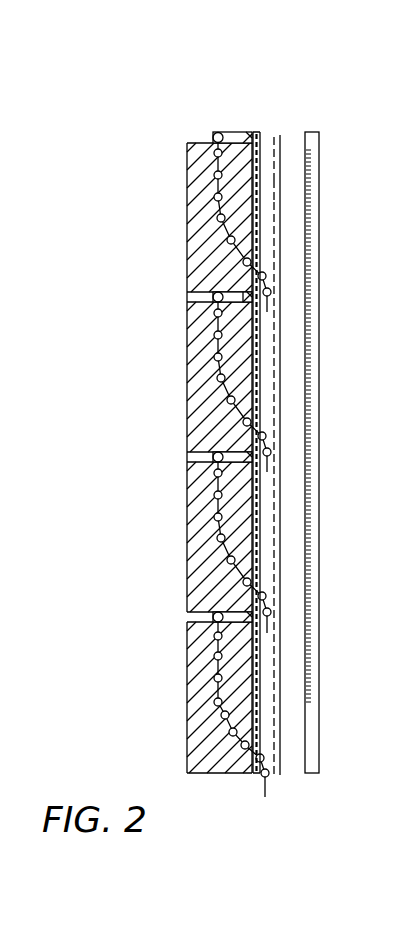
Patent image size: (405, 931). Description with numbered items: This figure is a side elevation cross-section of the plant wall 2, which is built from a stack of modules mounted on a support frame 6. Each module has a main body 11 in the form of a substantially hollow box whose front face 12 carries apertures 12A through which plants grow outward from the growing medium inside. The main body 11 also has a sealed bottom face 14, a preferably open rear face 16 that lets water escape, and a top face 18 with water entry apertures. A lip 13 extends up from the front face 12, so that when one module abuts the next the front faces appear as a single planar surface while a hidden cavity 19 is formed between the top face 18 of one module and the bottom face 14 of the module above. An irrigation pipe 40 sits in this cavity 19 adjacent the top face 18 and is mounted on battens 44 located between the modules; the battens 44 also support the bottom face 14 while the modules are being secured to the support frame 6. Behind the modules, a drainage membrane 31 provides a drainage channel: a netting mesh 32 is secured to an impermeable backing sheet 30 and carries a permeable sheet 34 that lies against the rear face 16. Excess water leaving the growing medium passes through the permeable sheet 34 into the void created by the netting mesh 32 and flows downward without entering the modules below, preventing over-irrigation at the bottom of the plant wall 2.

The plant wall 2 is at (105, 162).
The support frame 6 is at (322, 170).
The main body 11 is at (200, 412).
The front face 12 is at (185, 698).
The apertures 12A is at (185, 657).
The lip 13 is at (187, 300).
The bottom face 14 is at (193, 293).
The rear face 16 is at (252, 720).
The top face 18 is at (202, 143).
The cavity 19 is at (163, 458).
The impermeable backing sheet 30 is at (283, 143).
The drainage membrane 31 is at (274, 137).
The netting mesh 32 is at (277, 192).
The permeable sheet 34 is at (258, 132).
The pipe 40 is at (218, 132).
The battens 44 is at (253, 297).